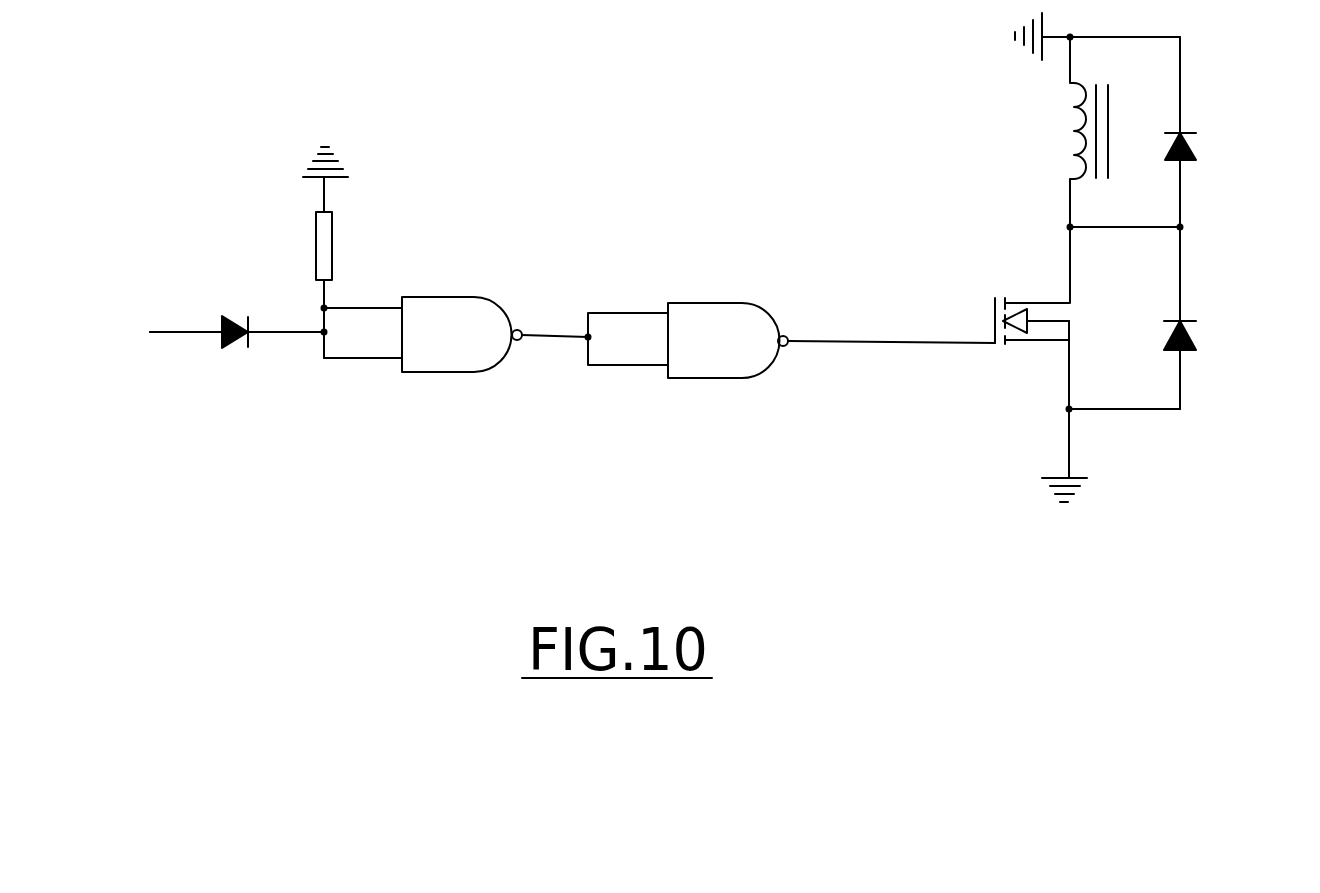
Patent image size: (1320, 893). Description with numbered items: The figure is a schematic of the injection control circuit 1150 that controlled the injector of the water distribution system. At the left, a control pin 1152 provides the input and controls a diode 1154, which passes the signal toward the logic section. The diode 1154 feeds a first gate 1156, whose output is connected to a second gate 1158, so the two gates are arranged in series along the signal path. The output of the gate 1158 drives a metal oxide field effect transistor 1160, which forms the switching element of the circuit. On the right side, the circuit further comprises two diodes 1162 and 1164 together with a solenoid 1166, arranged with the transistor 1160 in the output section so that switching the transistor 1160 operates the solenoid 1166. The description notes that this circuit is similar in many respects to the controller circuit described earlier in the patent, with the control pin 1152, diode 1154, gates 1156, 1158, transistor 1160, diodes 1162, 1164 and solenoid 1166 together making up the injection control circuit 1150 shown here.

The injection control circuit 1150 is at (669, 126).
The control pin 1152 is at (192, 347).
The diode 1154 is at (233, 344).
The gate 1156 is at (433, 340).
The gate 1158 is at (707, 353).
The metal oxide field effect transistor 1160 is at (992, 320).
The diode 1162 is at (1186, 348).
The diode 1164 is at (1193, 158).
The solenoid 1166 is at (1070, 132).